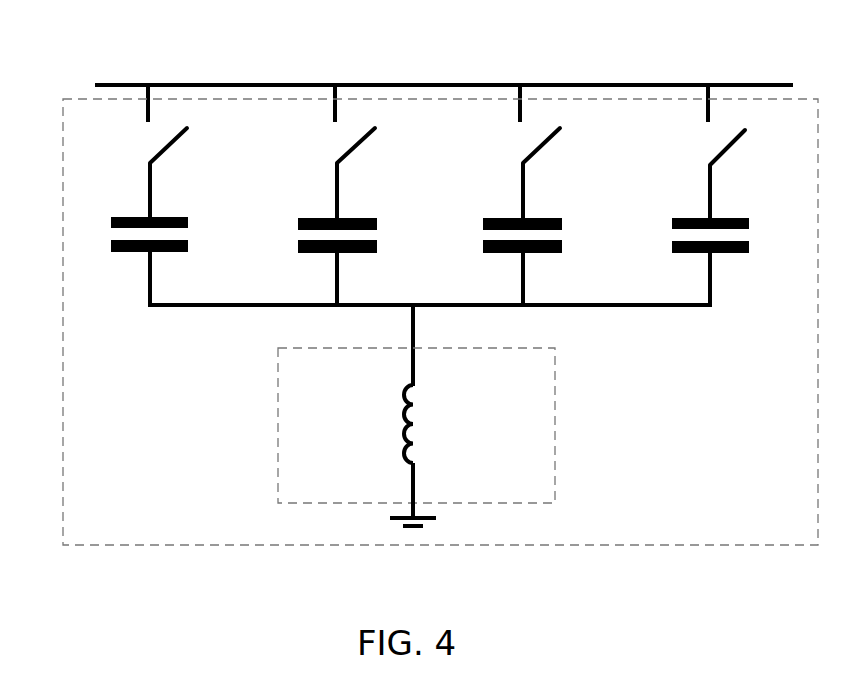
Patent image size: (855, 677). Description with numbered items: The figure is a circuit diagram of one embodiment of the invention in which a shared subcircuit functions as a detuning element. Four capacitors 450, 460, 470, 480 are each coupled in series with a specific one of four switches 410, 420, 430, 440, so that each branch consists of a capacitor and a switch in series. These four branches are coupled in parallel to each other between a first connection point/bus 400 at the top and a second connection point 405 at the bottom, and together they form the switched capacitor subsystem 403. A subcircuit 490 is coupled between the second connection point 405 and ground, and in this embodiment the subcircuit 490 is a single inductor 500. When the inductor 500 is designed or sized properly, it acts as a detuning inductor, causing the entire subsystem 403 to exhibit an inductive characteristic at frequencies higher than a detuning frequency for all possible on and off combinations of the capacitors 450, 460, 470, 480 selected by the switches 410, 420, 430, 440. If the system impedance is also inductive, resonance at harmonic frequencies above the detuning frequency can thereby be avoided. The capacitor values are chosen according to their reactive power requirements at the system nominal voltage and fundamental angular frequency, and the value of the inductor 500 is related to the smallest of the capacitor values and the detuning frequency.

The first connection point/bus 400 is at (395, 85).
The subsystem 403 is at (63, 324).
The second connection point 405 is at (628, 310).
The switch 410 is at (170, 147).
The switch 420 is at (358, 146).
The switch 430 is at (543, 146).
The switch 440 is at (728, 150).
The capacitor 450 is at (131, 216).
The capacitor 460 is at (313, 218).
The capacitor 470 is at (506, 218).
The capacitor 480 is at (689, 218).
The subcircuit 490 is at (278, 415).
The inductor 500 is at (398, 437).